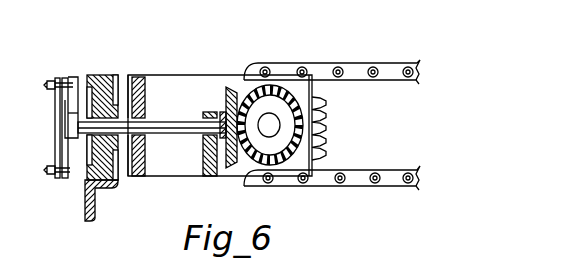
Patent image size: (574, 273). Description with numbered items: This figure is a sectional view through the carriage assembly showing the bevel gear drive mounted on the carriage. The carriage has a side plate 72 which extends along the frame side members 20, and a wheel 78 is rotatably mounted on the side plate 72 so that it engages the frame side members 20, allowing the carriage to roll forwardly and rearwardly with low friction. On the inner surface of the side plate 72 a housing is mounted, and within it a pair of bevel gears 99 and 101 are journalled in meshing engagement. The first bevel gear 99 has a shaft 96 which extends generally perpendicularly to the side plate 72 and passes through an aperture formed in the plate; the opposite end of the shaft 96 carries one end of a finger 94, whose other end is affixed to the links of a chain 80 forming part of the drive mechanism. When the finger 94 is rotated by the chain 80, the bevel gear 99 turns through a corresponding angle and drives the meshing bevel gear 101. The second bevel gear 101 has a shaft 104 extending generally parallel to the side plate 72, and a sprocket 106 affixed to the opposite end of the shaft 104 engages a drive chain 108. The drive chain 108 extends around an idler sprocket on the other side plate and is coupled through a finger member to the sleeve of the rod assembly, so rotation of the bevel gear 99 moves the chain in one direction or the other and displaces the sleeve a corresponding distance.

The frame side members 20 is at (95, 196).
The side plate 72 is at (145, 95).
The wheel 78 is at (115, 74).
The chain 80 is at (52, 78).
The finger 94 is at (72, 78).
The shaft 96 is at (161, 129).
The bevel gear 99 is at (240, 166).
The bevel gear 101 is at (286, 163).
The shaft 104 is at (268, 120).
The sprocket 106 is at (320, 132).
The drive chain 108 is at (387, 65).